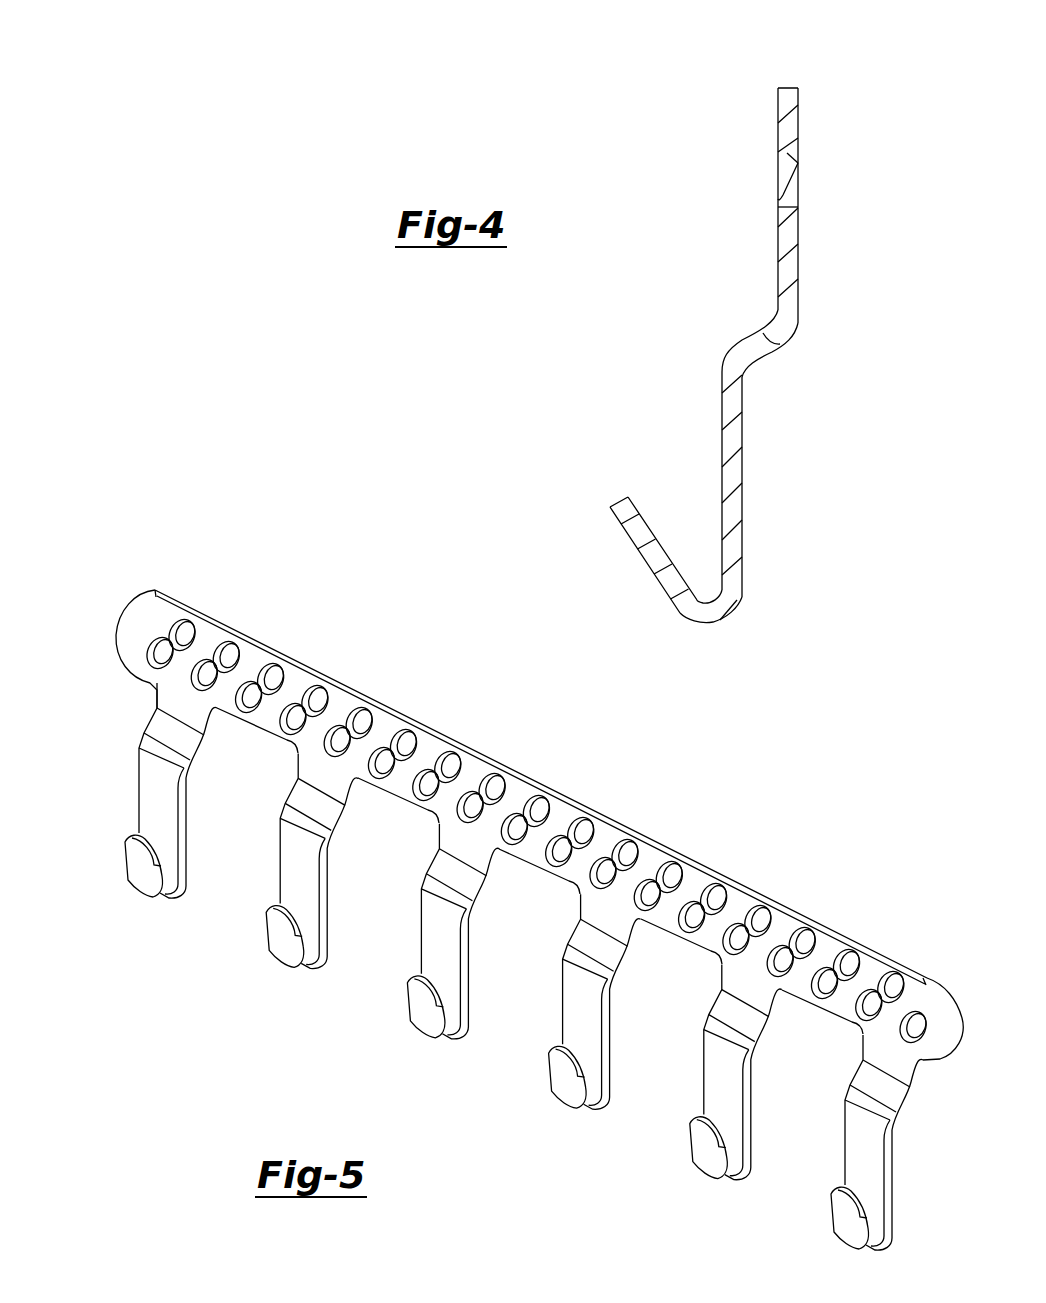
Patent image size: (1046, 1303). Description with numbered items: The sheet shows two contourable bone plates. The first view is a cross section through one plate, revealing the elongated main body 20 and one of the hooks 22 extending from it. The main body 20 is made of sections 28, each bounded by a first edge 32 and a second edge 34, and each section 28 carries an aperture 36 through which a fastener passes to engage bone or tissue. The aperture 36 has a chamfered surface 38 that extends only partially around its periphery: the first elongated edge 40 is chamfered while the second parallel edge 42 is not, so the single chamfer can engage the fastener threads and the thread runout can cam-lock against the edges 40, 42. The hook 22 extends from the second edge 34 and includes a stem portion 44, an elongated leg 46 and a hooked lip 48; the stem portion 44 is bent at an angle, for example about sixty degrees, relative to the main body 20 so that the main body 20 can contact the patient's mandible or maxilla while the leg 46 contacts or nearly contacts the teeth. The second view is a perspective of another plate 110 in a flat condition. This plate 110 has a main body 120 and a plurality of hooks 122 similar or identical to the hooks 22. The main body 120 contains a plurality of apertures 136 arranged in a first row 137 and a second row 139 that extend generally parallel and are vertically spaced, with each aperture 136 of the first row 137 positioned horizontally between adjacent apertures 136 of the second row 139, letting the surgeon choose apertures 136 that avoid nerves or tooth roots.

In FIG. 4, the main body 20 is at (729, 323).
In FIG. 4, the hooks 22 is at (694, 560).
In FIG. 4, the sections 28 is at (778, 105).
In FIG. 4, the first edge 32 is at (785, 88).
In FIG. 4, the second edge 34 is at (798, 310).
In FIG. 4, the aperture 36 is at (798, 195).
In FIG. 4, the chamfered surface 38 is at (778, 158).
In FIG. 4, the first elongated edge 40 is at (798, 168).
In FIG. 4, the second parallel edge 42 is at (780, 203).
In FIG. 4, the stem portion 44 is at (767, 340).
In FIG. 4, the elongated leg 46 is at (728, 417).
In FIG. 4, the hooked lip 48 is at (665, 582).
In FIG. 5, the plate 110 is at (502, 899).
In FIG. 5, the main body 120 is at (502, 804).
In FIG. 5, the hooks 122 is at (150, 888).
In FIG. 5, the apertures 136 is at (265, 672).
In FIG. 5, the first row 137 is at (160, 622).
In FIG. 5, the second row 139 is at (147, 640).